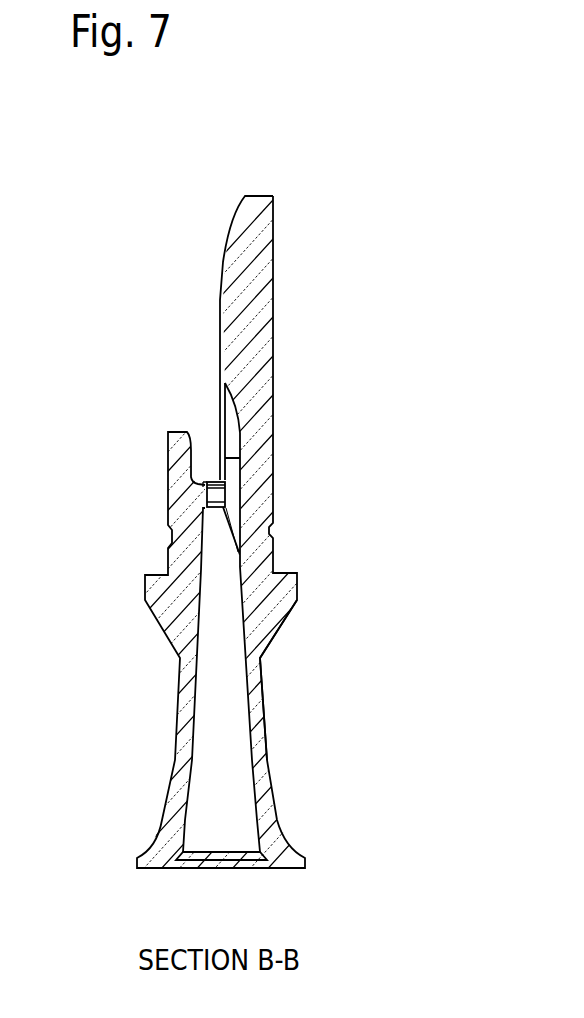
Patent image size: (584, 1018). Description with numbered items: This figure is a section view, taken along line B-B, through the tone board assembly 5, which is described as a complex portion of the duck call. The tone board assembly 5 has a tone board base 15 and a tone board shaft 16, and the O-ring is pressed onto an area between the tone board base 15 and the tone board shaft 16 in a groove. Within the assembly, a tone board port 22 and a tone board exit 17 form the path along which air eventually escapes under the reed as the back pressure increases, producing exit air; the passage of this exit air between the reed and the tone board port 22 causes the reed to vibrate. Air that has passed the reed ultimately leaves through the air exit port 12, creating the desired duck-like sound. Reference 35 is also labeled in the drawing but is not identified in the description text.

The tone board assembly 5 is at (346, 461).
The air exit port 12 is at (182, 749).
The tone board base 15 is at (285, 610).
The tone board shaft 16 is at (275, 367).
The tone board exit 17 is at (215, 497).
The tone board port 22 is at (235, 432).
The housing 35 is at (93, 389).